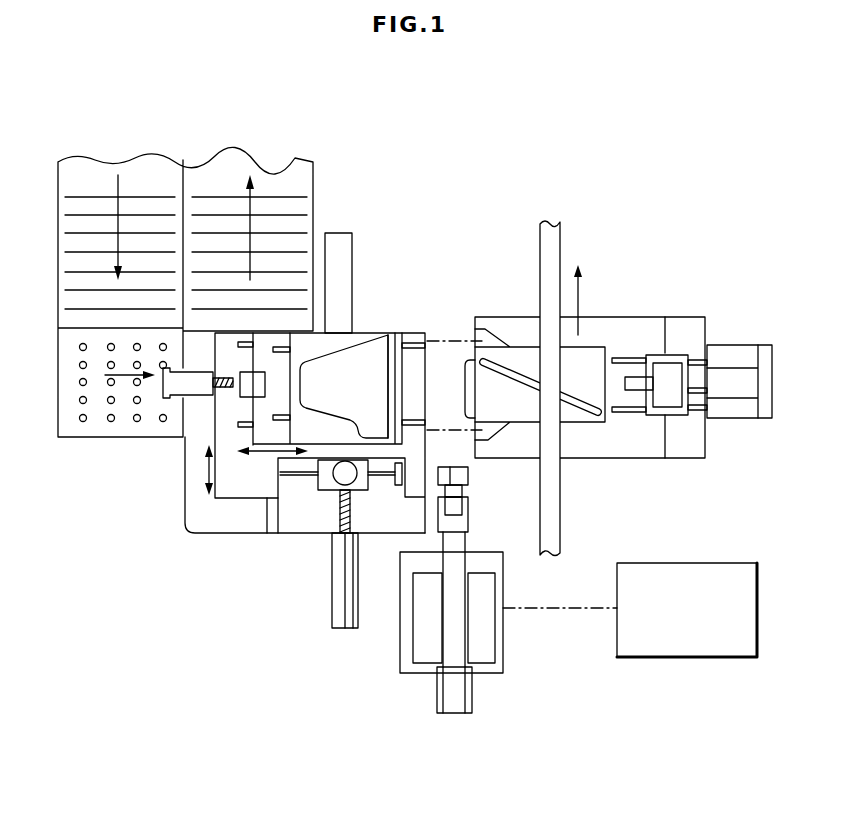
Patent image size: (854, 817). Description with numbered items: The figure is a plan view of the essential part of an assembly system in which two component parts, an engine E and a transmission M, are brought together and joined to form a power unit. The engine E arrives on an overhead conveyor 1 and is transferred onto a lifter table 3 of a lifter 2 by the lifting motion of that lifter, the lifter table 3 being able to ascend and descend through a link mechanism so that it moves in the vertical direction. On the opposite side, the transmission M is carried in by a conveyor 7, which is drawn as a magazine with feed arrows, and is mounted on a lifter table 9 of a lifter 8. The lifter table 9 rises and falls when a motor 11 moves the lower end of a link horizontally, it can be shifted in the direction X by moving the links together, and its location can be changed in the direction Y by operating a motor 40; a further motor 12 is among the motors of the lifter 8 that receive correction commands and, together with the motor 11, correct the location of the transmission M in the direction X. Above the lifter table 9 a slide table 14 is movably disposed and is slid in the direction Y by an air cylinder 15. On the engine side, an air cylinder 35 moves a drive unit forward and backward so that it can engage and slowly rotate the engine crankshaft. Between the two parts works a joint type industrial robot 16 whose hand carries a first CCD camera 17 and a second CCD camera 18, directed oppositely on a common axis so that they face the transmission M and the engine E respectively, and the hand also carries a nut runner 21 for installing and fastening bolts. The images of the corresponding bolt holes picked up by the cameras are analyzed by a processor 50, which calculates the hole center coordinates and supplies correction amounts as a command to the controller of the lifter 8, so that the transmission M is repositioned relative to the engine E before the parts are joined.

The overhead conveyor 1 is at (560, 233).
The lifter 2 is at (600, 436).
The lifter table 3 is at (653, 450).
The conveyor 7 is at (95, 200).
The lifter 8 is at (245, 472).
The lifter table 9 is at (283, 440).
The motor 11 is at (341, 231).
The motor 12 is at (330, 597).
The slide table 14 is at (343, 342).
The air cylinder 15 is at (248, 387).
The joint type industrial robot 16 is at (395, 645).
The first CCD camera 17 is at (442, 478).
The second CCD camera 18 is at (468, 482).
The nut runner 21 is at (395, 480).
The air cylinder 35 is at (738, 393).
The motor 40 is at (177, 385).
The processor 50 is at (680, 658).
The transmission M is at (318, 393).
The engine E is at (591, 357).
The direction X is at (203, 470).
The direction Y is at (272, 459).